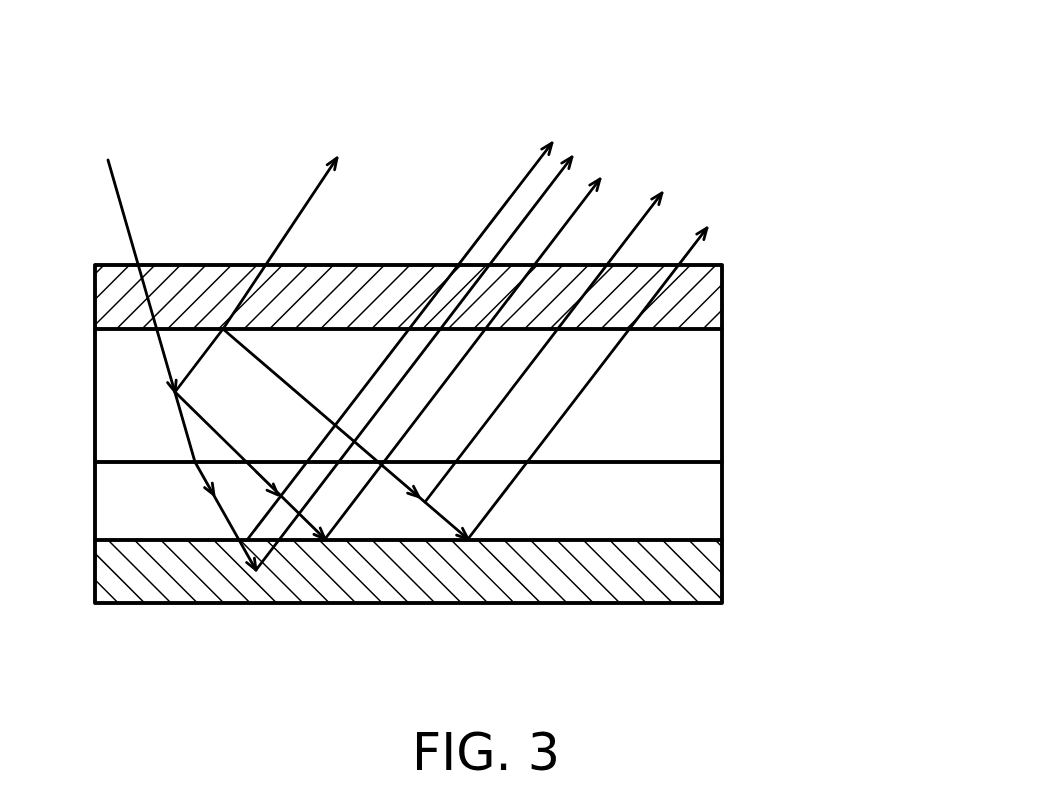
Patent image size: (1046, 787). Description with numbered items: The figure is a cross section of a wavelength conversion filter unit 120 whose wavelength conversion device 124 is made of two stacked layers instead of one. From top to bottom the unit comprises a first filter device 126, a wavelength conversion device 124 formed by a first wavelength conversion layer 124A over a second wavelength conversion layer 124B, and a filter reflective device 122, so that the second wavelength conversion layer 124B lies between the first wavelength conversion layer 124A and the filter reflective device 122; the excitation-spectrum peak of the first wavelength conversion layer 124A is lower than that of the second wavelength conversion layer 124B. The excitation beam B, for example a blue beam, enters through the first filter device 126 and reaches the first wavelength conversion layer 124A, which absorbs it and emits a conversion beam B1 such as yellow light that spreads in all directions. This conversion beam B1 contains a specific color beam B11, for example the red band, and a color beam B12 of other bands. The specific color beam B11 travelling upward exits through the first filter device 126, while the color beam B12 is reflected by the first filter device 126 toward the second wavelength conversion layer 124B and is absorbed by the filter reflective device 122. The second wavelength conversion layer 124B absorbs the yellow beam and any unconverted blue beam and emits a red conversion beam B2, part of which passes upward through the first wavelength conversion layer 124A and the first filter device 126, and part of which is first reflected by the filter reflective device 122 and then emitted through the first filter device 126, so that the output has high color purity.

The wavelength conversion filter unit 120 is at (489, 434).
The first filter device 126 is at (712, 299).
The wavelength conversion device 124 is at (482, 434).
The first wavelength conversion layer 124A is at (703, 382).
The second wavelength conversion layer 124B is at (703, 498).
The filter reflective device 122 is at (462, 551).
The excitation beam B is at (118, 198).
The conversion beam B1 is at (195, 362).
The specific color beam B11 is at (414, 18).
The color beam other than the specific color beam B12 is at (291, 386).
The conversion beam B2 is at (441, 517).